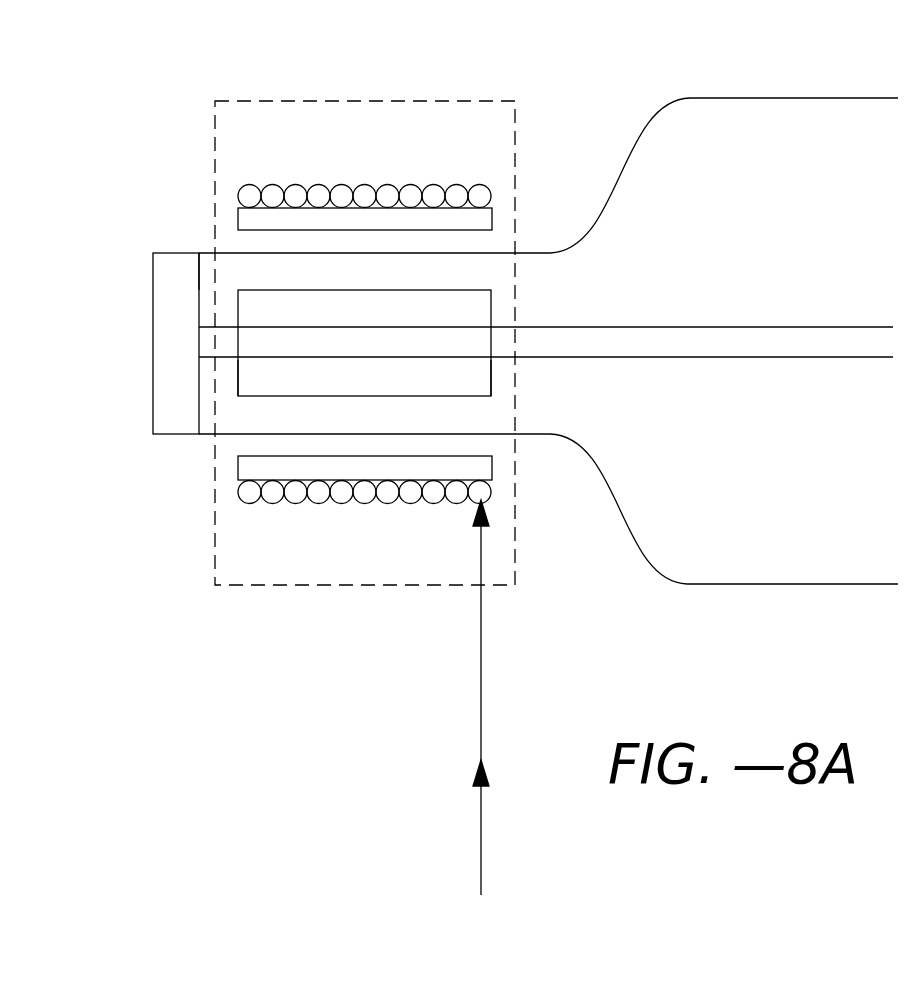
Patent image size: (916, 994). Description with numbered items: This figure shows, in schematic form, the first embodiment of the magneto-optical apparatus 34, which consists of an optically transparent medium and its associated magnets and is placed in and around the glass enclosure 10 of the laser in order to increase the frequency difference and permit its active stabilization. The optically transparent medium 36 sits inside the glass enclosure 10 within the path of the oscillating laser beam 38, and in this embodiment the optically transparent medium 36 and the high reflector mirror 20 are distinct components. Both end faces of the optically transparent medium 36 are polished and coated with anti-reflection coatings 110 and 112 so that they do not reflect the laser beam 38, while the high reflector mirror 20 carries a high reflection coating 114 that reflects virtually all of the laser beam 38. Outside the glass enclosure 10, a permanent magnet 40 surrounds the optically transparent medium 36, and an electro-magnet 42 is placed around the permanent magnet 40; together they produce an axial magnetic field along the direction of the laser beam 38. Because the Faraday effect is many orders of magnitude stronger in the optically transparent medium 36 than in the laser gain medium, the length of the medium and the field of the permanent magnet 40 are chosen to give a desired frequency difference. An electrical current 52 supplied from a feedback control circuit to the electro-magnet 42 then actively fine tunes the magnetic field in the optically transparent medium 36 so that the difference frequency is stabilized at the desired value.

The glass enclosure 10 is at (775, 98).
The high reflector mirror 20 is at (153, 324).
The magneto-optical apparatus 34 is at (512, 165).
The optically transparent medium 36 is at (445, 290).
The laser beam 38 is at (726, 327).
The permanent magnet 40 is at (237, 218).
The electro-magnet 42 is at (253, 185).
The electrical current 52 is at (481, 678).
The anti-reflection coating 110 is at (491, 370).
The anti-reflection coating 112 is at (238, 380).
The high reflection coating 114 is at (200, 287).